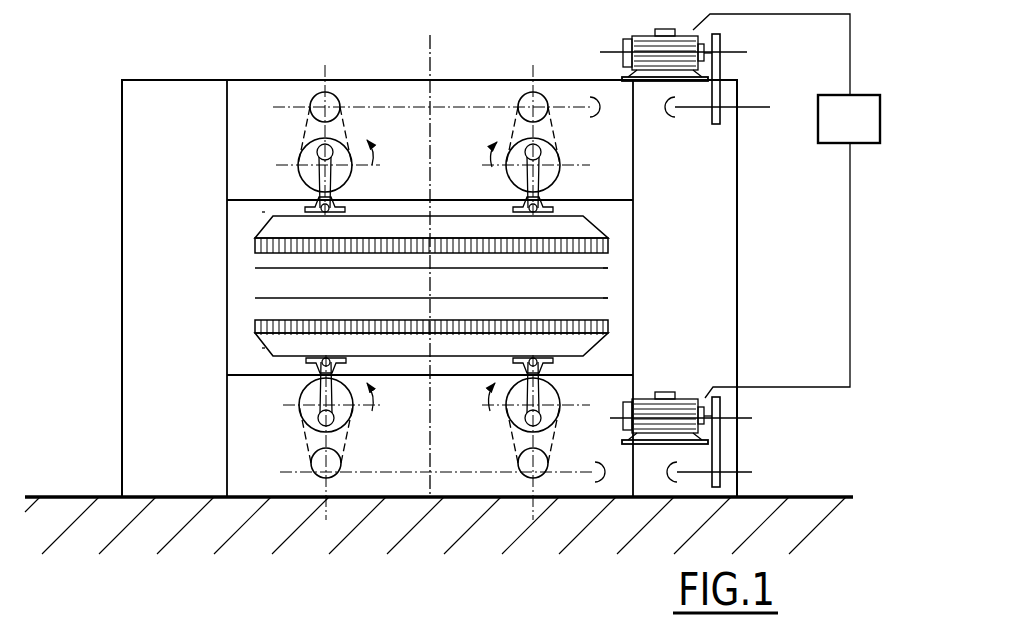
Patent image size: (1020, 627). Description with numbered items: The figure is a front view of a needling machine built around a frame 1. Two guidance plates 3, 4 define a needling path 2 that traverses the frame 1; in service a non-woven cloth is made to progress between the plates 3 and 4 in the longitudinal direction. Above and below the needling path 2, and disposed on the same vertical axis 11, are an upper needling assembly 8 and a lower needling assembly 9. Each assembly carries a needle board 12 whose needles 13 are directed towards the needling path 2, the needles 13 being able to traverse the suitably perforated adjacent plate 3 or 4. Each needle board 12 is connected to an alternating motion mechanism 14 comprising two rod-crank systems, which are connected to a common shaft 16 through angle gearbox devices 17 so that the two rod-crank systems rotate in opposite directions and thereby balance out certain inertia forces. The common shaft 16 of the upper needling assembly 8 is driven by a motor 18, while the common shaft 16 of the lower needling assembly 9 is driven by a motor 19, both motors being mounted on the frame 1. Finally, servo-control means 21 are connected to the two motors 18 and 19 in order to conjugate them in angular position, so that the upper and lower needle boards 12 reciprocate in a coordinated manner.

The frame 1 is at (767, 206).
The needling path 2 is at (431, 284).
The plate 3 is at (604, 270).
The plate 4 is at (603, 298).
The upper needling assembly 8 is at (262, 212).
The lower needling assembly 9 is at (262, 348).
The vertical axis 11 is at (432, 59).
The needle board 12 is at (392, 226).
The needles 13 is at (258, 246).
The alternating motion mechanism 14 is at (283, 150).
The common shaft 16 is at (501, 107).
The angle gearbox devices 17 is at (321, 93).
The motor 18 is at (682, 58).
The motor 19 is at (689, 406).
The servo-control means 21 is at (786, 206).